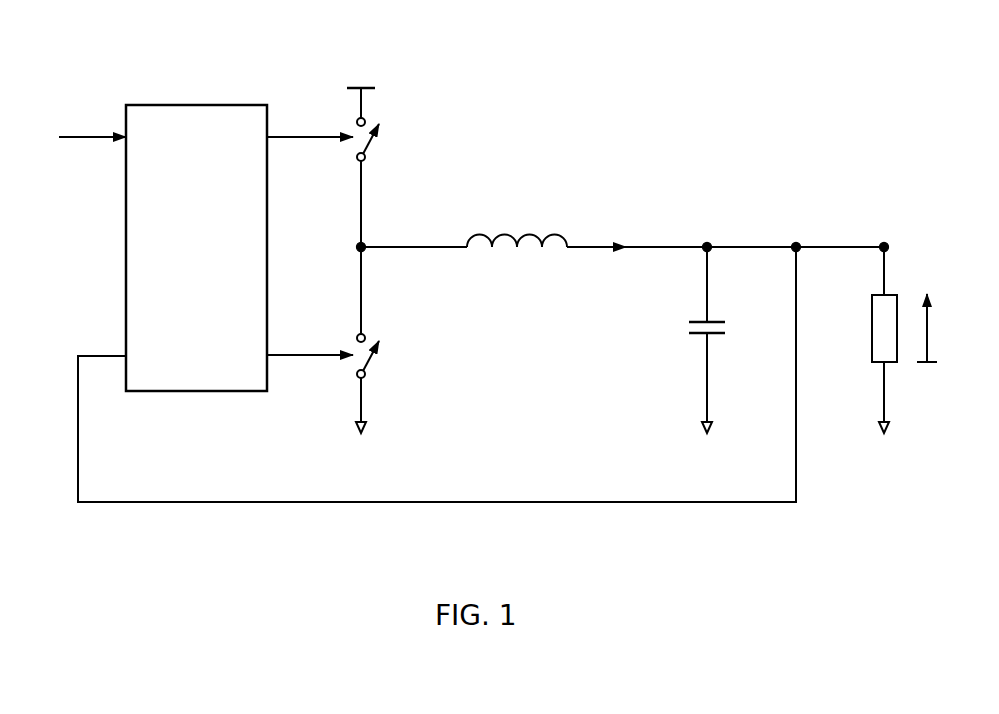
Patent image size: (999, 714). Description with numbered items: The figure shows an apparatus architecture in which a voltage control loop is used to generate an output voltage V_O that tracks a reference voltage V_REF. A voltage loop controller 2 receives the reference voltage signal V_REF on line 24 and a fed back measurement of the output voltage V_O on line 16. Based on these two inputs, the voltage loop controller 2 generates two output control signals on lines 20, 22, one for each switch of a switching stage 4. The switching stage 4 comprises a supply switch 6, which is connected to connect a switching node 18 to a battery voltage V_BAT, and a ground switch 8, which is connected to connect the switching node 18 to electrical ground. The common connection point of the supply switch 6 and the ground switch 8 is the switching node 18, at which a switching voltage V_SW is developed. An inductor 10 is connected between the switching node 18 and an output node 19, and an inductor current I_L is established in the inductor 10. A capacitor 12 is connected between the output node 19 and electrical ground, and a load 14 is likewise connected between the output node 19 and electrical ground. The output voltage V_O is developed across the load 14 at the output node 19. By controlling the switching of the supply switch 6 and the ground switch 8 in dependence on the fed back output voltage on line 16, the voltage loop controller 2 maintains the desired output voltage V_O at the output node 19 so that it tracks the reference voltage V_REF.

The voltage loop controller 2 is at (190, 105).
The switching stage 4 is at (388, 48).
The supply switch 6 is at (368, 140).
The ground switch 8 is at (368, 357).
The inductor 10 is at (510, 237).
The capacitor 12 is at (691, 337).
The load 14 is at (877, 364).
The line 16 is at (585, 503).
The switching node 18 is at (358, 246).
The output node 19 is at (888, 243).
The line 20 is at (288, 136).
The line 22 is at (288, 354).
The line 24 is at (88, 141).